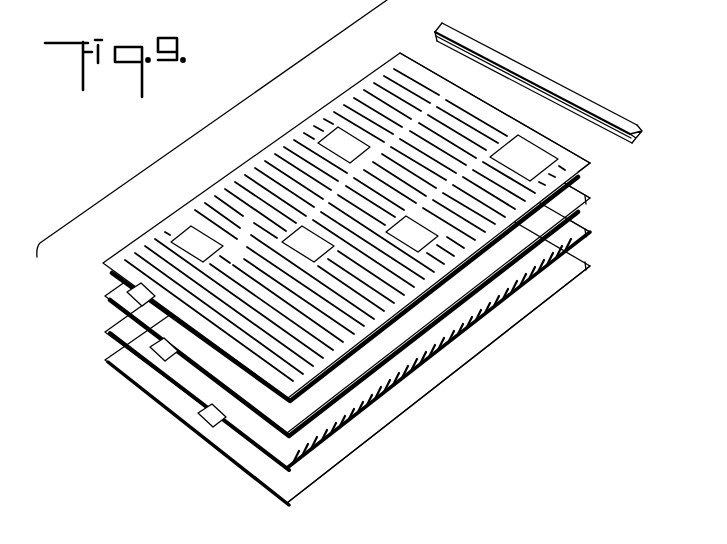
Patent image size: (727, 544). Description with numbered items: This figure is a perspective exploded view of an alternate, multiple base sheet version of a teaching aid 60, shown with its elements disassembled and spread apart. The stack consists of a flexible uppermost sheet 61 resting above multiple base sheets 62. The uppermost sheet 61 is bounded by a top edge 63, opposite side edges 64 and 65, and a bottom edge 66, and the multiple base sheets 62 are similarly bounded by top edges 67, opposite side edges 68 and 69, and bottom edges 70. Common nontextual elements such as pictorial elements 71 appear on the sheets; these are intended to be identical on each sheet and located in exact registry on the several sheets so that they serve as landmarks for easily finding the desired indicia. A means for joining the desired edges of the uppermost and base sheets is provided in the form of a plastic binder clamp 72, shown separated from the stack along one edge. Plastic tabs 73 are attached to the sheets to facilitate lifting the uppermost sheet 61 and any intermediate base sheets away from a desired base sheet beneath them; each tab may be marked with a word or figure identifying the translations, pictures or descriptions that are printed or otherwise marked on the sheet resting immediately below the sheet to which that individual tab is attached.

The teaching aid 60 is at (226, 112).
The flexible uppermost sheet 61 is at (377, 72).
The multiple base sheets 62 is at (588, 230).
The top edge 63 is at (566, 154).
The side edge 64 is at (137, 241).
The side edge 65 is at (586, 179).
The bottom edge 66 is at (116, 274).
The top edges 67 is at (592, 267).
The side edges 68 is at (77, 322).
The side edges 69 is at (447, 314).
The bottom edges 70 is at (152, 420).
The pictorial elements 71 is at (521, 152).
The plastic binder clamp 72 is at (543, 76).
The plastic tabs 73 is at (178, 351).